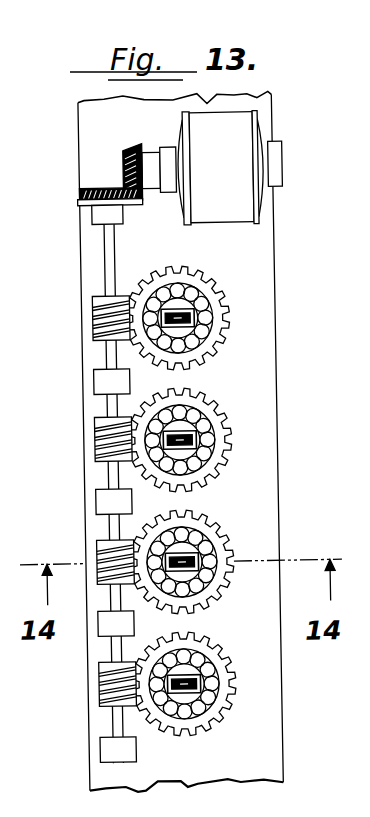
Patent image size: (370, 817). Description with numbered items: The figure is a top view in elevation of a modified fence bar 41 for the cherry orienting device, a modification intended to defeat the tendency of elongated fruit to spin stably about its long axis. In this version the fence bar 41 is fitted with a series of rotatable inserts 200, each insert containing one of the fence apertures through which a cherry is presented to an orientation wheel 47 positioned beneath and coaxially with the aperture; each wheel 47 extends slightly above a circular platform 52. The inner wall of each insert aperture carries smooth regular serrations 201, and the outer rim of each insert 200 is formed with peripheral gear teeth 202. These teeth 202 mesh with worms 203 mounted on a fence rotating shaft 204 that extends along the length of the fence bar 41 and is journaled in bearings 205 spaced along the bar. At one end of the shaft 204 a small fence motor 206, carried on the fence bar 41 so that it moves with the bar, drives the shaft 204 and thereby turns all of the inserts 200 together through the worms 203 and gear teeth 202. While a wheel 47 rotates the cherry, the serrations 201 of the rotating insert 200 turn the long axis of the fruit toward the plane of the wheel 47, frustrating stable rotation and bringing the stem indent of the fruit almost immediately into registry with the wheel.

The fence bar 41 is at (109, 120).
The orientation wheel 47 is at (197, 318).
The circular platform 52 is at (189, 328).
The rotatable insert 200 is at (203, 502).
The serrations 201 is at (195, 345).
The peripheral gear teeth 202 is at (196, 271).
The worm 203 is at (96, 318).
The fence rotating shaft 204 is at (108, 240).
The bearings 205 is at (99, 496).
The fence motor 206 is at (243, 171).